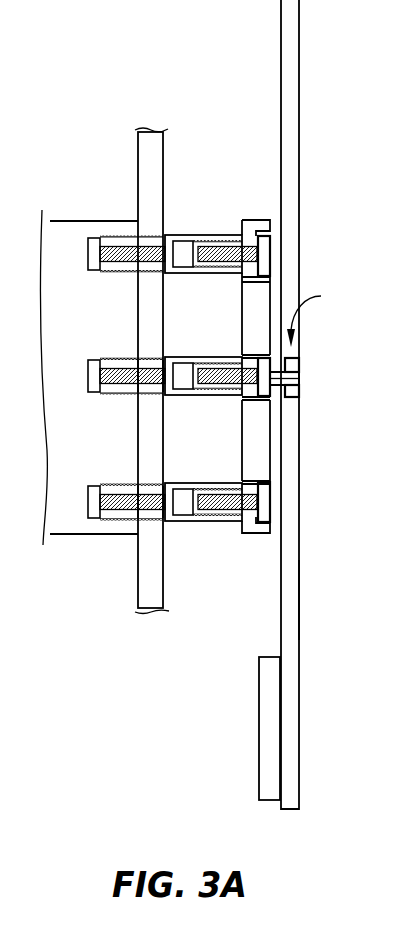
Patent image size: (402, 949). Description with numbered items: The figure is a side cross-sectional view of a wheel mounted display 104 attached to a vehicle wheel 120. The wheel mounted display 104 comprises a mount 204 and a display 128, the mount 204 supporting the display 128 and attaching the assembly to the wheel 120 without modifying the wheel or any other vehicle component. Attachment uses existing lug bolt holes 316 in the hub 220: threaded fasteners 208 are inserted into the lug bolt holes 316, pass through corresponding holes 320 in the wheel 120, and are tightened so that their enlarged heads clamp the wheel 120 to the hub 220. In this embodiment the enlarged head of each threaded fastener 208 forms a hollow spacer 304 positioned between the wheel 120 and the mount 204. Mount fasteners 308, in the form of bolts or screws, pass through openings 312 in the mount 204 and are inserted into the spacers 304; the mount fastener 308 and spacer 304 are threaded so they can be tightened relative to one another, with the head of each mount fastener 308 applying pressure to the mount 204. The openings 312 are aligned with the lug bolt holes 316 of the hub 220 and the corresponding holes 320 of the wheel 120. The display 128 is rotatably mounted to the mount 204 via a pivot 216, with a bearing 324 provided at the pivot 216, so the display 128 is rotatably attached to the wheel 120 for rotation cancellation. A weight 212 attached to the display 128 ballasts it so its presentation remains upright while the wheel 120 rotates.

The wheel mounted display 104 is at (256, 83).
The wheel 120 is at (163, 165).
The display 128 is at (300, 588).
The mount 204 is at (258, 220).
The threaded fastener 208 is at (152, 240).
The weight 212 is at (273, 657).
The pivot 216 is at (324, 314).
The hub 220 is at (117, 221).
The spacer 304 is at (178, 273).
The mount fastener 308 is at (272, 255).
The opening 312 is at (250, 268).
The lug bolt hole 316 is at (88, 255).
The corresponding hole 320 is at (157, 395).
The bearing 324 is at (299, 392).